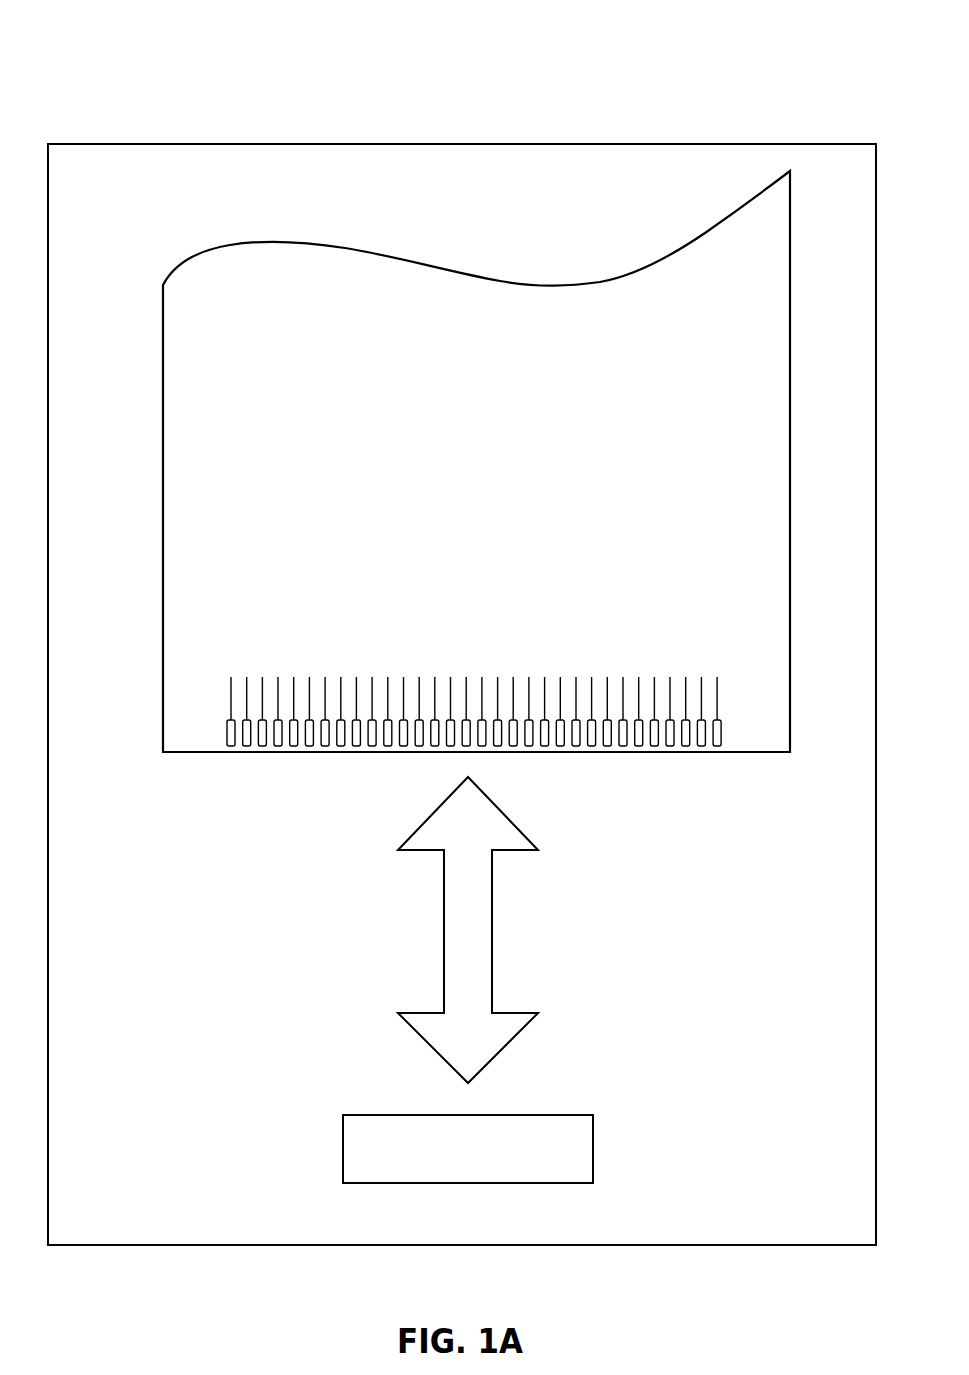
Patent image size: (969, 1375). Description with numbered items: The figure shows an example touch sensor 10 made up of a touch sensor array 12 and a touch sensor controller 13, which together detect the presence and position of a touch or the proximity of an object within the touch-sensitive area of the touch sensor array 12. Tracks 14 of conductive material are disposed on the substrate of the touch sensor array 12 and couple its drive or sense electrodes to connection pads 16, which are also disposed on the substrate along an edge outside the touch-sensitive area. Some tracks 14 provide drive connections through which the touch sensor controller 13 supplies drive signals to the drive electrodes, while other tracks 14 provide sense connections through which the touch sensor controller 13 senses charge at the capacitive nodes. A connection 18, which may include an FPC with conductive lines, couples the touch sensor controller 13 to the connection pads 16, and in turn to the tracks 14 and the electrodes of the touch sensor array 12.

The touch sensor 10 is at (712, 112).
The touch sensor array 12 is at (205, 419).
The touch sensor controller 13 is at (343, 1150).
The tracks 14 is at (231, 707).
The connection pads 16 is at (226, 731).
The connection 18 is at (445, 931).